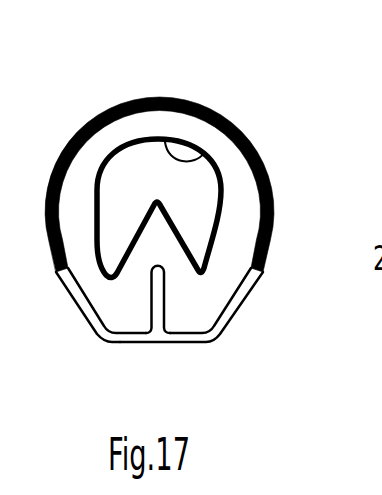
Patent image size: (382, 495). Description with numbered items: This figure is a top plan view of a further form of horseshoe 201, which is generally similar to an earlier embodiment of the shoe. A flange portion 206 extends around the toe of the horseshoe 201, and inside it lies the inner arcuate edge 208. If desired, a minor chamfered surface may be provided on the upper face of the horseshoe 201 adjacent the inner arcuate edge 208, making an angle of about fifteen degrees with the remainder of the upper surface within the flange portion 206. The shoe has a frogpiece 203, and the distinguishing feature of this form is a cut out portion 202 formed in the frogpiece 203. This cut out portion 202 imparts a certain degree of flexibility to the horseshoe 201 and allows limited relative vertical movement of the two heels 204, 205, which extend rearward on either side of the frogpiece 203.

The horseshoe 201 is at (100, 297).
The cut out portion 202 is at (157, 323).
The frogpiece 203 is at (150, 230).
The heel 204 is at (105, 332).
The heel 205 is at (188, 323).
The flange portion 206 is at (255, 152).
The inner arcuate edge 208 is at (206, 153).